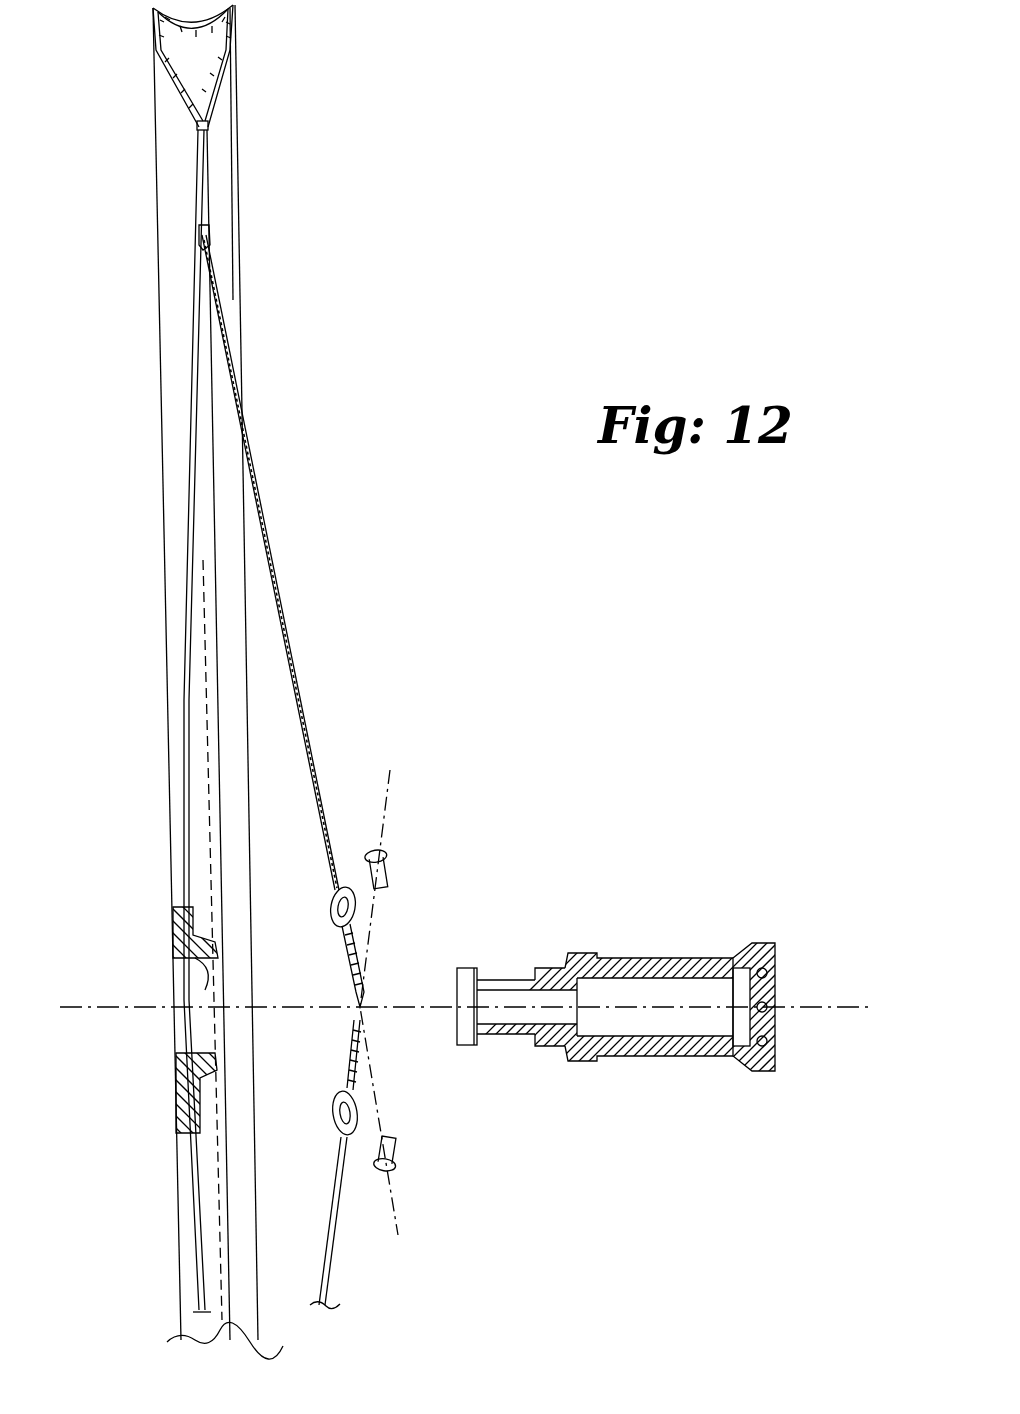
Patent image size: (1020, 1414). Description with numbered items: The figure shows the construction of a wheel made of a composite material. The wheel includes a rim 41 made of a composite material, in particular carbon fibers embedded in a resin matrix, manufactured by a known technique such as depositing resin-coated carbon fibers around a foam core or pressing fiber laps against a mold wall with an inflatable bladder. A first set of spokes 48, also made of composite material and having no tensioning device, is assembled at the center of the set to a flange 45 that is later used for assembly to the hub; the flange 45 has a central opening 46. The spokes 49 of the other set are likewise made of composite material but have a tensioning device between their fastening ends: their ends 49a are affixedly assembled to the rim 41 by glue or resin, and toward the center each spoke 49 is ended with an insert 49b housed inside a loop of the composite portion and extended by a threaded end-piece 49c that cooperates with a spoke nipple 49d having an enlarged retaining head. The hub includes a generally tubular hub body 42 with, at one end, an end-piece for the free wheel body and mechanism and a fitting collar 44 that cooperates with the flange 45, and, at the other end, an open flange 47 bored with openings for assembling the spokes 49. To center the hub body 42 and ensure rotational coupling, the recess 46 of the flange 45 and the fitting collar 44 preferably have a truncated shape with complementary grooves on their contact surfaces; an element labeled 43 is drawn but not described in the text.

The rim 41 is at (157, 282).
The hub body 42 is at (653, 962).
The end flange 43 is at (497, 967).
The fitting collar 44 is at (583, 1056).
The flange 45 is at (175, 1087).
The central opening 46 is at (202, 957).
The open flange 47 is at (767, 1028).
The spokes 48 is at (200, 646).
The spokes 49 is at (288, 643).
The ends 49a is at (210, 243).
The insert 49b is at (347, 903).
The threaded end-piece 49c is at (370, 940).
The spoke nipple 49d is at (392, 1147).